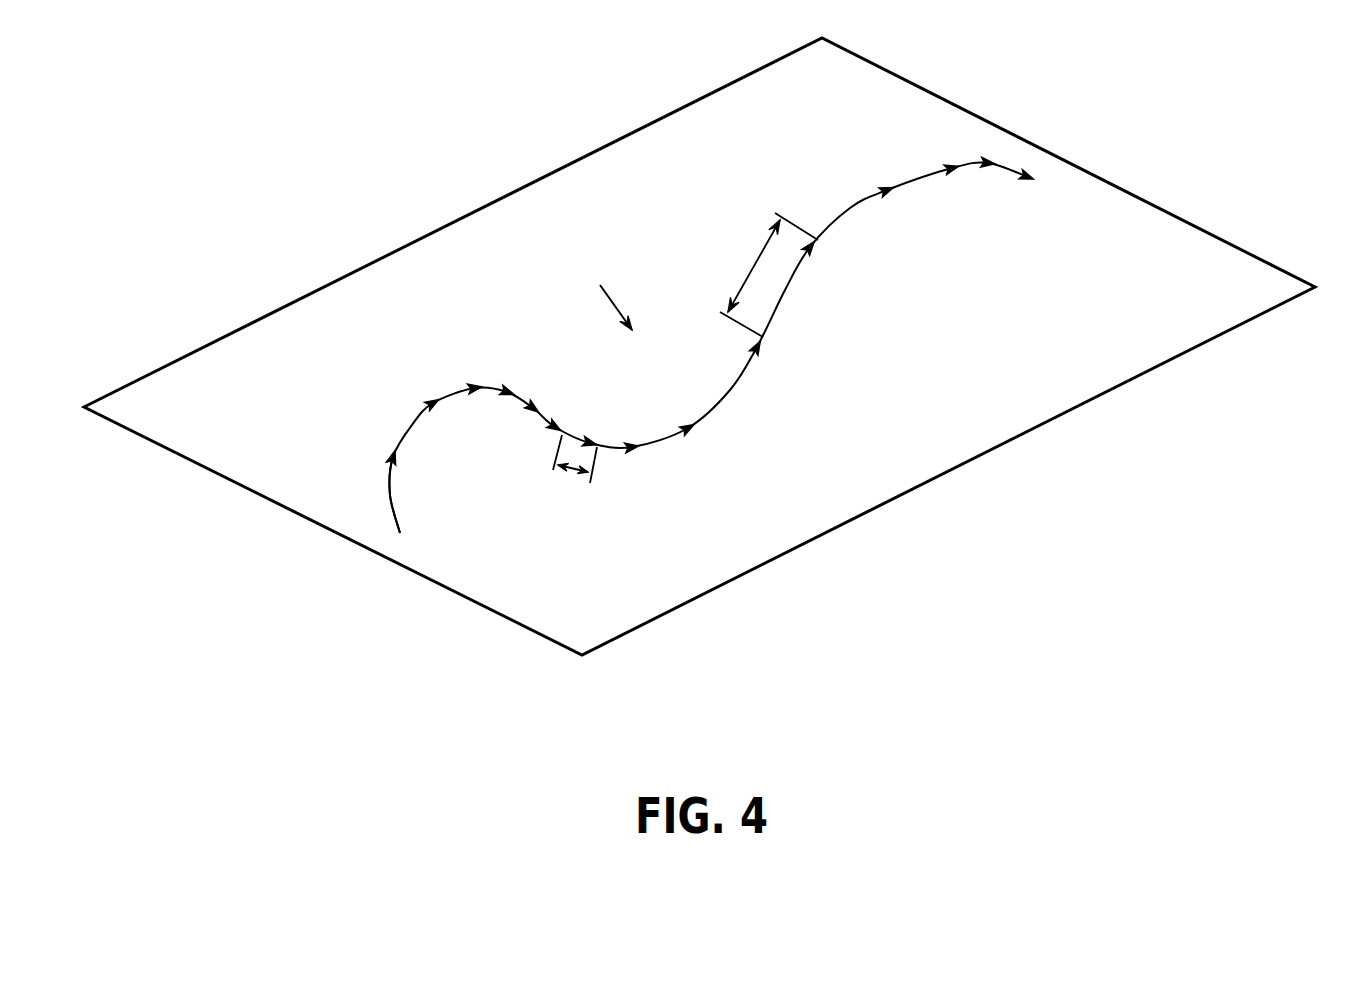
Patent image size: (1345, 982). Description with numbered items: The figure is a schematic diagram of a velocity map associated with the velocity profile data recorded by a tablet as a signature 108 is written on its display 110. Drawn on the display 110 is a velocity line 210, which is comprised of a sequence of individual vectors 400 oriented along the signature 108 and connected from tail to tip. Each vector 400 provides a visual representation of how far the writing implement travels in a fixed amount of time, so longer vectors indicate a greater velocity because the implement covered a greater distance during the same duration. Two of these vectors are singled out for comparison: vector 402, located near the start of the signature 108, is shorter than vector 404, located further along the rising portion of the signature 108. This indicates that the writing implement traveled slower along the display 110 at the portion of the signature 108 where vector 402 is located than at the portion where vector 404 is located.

The display 110 is at (480, 240).
The signature 108 is at (737, 385).
The individual vectors 400 is at (388, 490).
The velocity line 210 is at (599, 284).
The vector 402 is at (573, 473).
The vector 404 is at (753, 267).